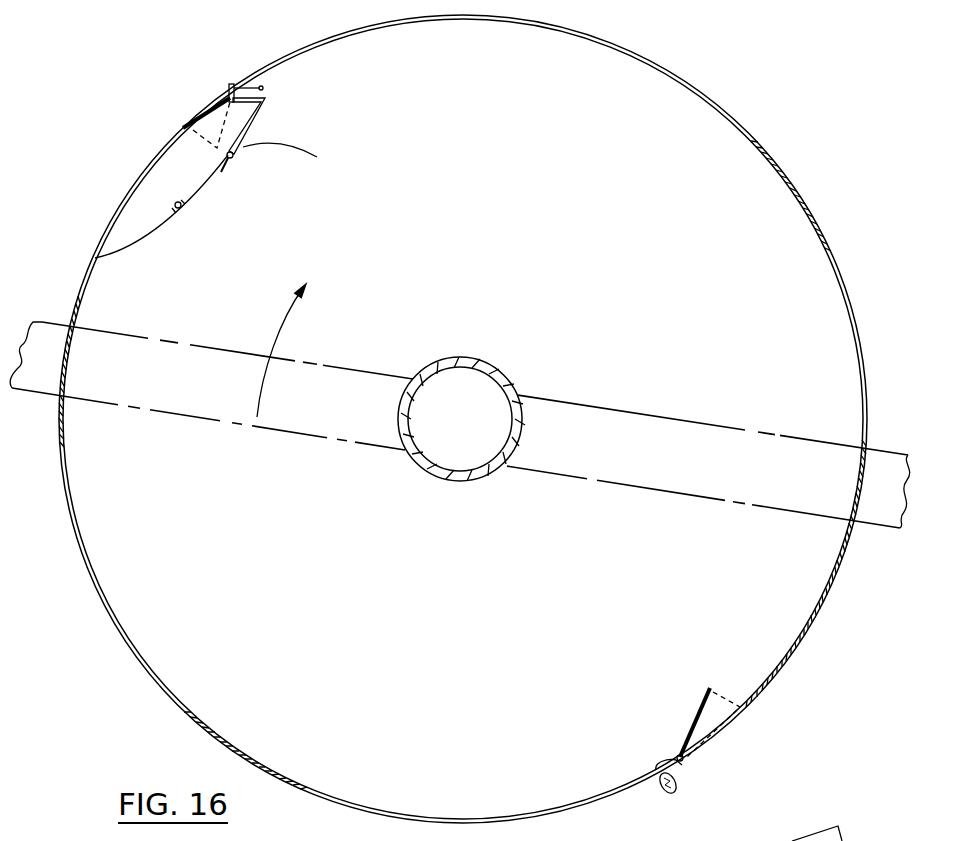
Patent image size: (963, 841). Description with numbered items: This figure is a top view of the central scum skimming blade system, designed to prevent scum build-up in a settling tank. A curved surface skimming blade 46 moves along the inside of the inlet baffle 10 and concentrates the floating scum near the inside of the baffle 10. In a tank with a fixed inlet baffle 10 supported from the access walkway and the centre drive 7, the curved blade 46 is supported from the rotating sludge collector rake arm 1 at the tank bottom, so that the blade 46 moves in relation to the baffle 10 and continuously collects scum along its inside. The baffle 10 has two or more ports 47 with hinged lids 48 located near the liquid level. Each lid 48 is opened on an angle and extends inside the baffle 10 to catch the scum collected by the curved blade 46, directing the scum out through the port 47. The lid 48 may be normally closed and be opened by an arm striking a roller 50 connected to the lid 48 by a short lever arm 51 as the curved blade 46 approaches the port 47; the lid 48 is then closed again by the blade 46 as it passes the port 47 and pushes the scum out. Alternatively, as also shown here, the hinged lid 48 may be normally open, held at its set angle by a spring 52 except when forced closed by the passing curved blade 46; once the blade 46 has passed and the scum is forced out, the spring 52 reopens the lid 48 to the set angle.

The rotating sludge collector rake arm 1 is at (690, 418).
The centre drive 7 is at (495, 368).
The inlet baffle 10 is at (743, 130).
The curved surface skimming blade 46 is at (140, 242).
The port 47 is at (720, 735).
The hinged lid 48 is at (200, 104).
The roller 50 is at (725, 840).
The short lever arm 51 is at (664, 831).
The spring 52 is at (652, 795).